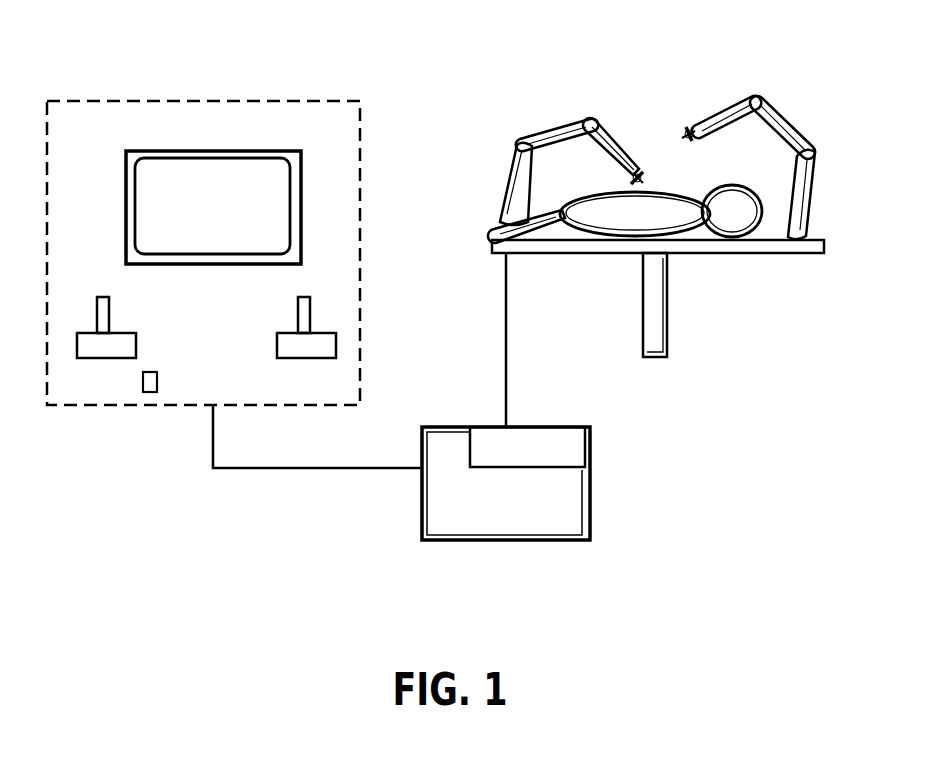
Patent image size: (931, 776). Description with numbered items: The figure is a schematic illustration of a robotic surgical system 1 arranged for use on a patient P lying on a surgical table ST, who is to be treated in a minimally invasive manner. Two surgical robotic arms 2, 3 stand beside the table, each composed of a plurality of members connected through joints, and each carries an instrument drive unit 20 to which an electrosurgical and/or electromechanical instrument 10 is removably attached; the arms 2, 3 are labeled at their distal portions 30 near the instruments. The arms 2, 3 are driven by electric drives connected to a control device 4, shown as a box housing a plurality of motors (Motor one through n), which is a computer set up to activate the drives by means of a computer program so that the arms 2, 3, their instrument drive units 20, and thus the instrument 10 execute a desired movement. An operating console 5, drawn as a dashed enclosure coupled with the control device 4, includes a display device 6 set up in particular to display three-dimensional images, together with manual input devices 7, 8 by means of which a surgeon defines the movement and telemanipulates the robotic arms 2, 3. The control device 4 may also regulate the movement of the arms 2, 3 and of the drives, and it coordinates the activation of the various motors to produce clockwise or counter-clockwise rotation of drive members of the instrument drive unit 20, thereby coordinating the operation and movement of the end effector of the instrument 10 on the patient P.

The robotic surgical system 1 is at (729, 461).
The surgical robotic arm 2 is at (511, 118).
The surgical robotic arm 3 is at (778, 110).
The control device 4 is at (511, 503).
The operating console 5 is at (138, 63).
The display device 6 is at (225, 215).
The manual input device 7 is at (90, 348).
The manual input device 8 is at (305, 348).
The electrosurgical and/or electromechanical instrument 10 is at (641, 171).
The instrument drive unit 20 is at (639, 170).
The robotic arm distal end / joint 30 is at (625, 177).
The surgical table ST is at (585, 245).
The patient P is at (672, 218).